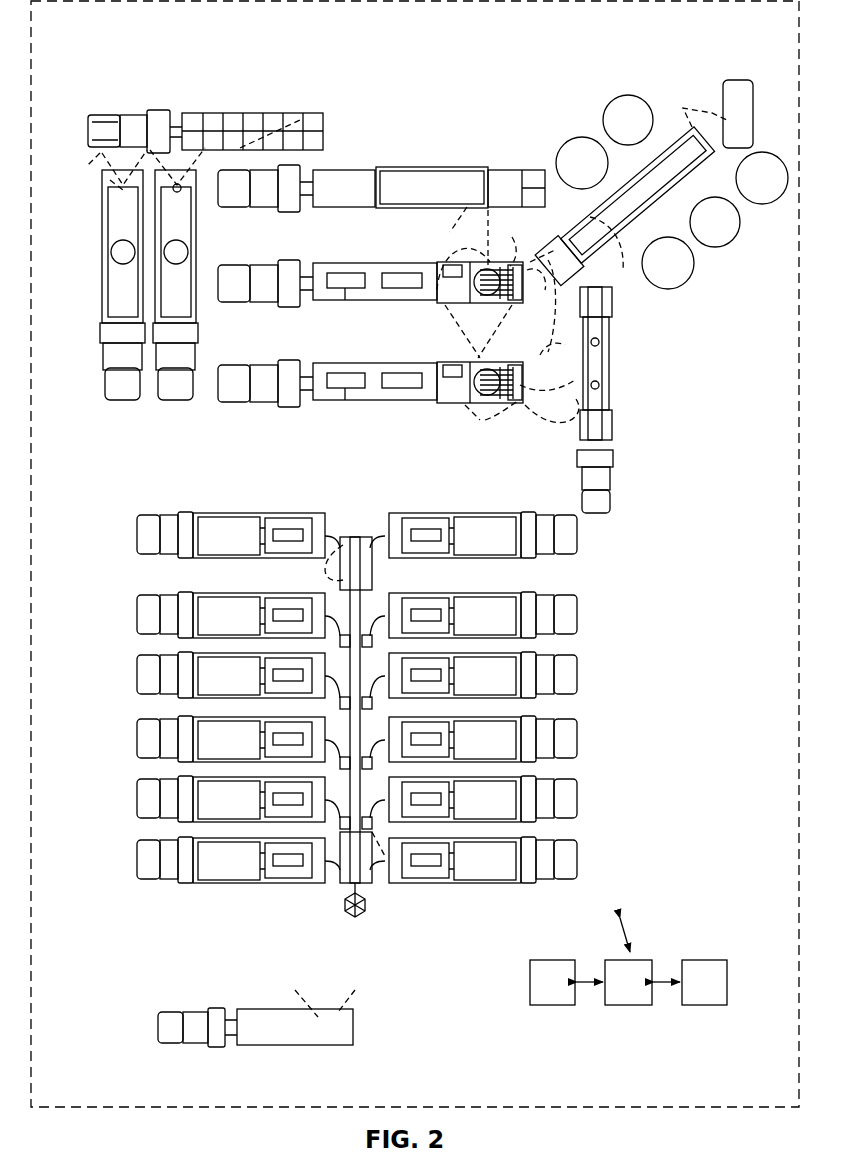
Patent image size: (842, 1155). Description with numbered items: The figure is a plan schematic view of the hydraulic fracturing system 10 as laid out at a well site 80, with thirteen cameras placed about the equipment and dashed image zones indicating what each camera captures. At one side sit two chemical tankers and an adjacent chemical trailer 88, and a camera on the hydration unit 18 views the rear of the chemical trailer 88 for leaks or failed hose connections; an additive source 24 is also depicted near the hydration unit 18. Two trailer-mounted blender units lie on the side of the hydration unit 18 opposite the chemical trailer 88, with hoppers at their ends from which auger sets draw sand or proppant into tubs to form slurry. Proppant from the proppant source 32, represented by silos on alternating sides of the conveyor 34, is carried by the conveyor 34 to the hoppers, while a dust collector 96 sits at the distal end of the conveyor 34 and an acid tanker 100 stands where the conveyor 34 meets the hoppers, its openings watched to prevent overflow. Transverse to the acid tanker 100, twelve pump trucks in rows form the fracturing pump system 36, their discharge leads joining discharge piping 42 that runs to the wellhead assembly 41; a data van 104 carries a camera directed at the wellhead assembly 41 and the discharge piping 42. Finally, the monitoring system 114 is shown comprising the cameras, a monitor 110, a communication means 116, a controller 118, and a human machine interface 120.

The hydraulic fracturing system 10 is at (115, 35).
The hydration unit 18 is at (424, 150).
The additive source 24 is at (90, 100).
The proppant source 32 is at (586, 115).
The conveyor 34 is at (660, 118).
The fracturing pump system 36 is at (97, 647).
The wellhead assembly 41 is at (341, 914).
The discharge piping 42 is at (340, 885).
The well site 80 is at (83, 900).
The chemical trailer 88 is at (248, 113).
The dust collector 96 is at (745, 80).
The acid tanker 100 is at (622, 412).
The data van 104 is at (160, 1005).
The monitor 110 is at (703, 1005).
The monitoring system 114 is at (680, 936).
The communication means 116 is at (622, 932).
The controller 118 is at (627, 1005).
The human machine interface 120 is at (550, 1005).